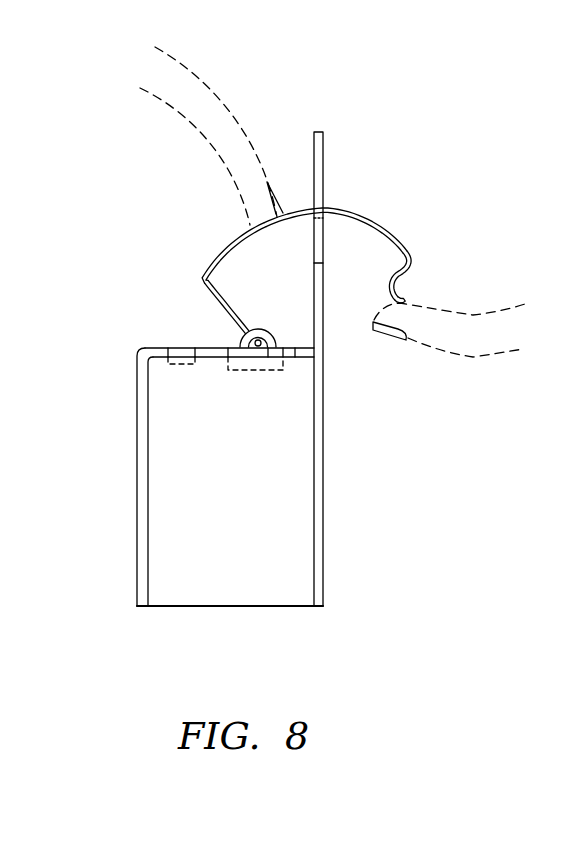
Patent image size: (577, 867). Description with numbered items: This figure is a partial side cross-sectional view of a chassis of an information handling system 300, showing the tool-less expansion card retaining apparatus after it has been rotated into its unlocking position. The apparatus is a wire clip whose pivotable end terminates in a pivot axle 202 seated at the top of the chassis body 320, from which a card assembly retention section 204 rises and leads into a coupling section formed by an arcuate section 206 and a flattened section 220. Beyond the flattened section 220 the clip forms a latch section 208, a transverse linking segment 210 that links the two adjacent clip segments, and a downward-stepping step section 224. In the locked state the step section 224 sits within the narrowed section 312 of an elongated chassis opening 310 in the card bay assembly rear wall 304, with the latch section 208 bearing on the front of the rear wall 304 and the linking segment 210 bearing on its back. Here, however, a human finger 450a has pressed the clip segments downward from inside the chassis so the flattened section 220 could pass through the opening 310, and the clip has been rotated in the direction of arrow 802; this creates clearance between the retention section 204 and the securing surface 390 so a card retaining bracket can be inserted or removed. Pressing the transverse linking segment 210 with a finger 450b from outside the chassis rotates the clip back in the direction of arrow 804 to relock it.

The pivot axle 202 is at (238, 345).
The card assembly retention section 204 is at (222, 307).
The arcuate section 206 is at (256, 224).
The latch section 208 is at (408, 281).
The transverse linking segment 210 is at (404, 301).
The flattened section 220 is at (386, 230).
The step section 224 is at (393, 303).
The information handling system 300 is at (291, 238).
The card bay assembly rear wall 304 is at (313, 165).
The elongated chassis opening 310 is at (314, 260).
The narrowed section 312 is at (313, 222).
The housing body 320 is at (137, 537).
The securing surface 390 is at (294, 347).
The human finger 450a is at (209, 84).
The human finger 450b is at (491, 345).
The arrow 802 is at (221, 229).
The arrow 804 is at (372, 256).